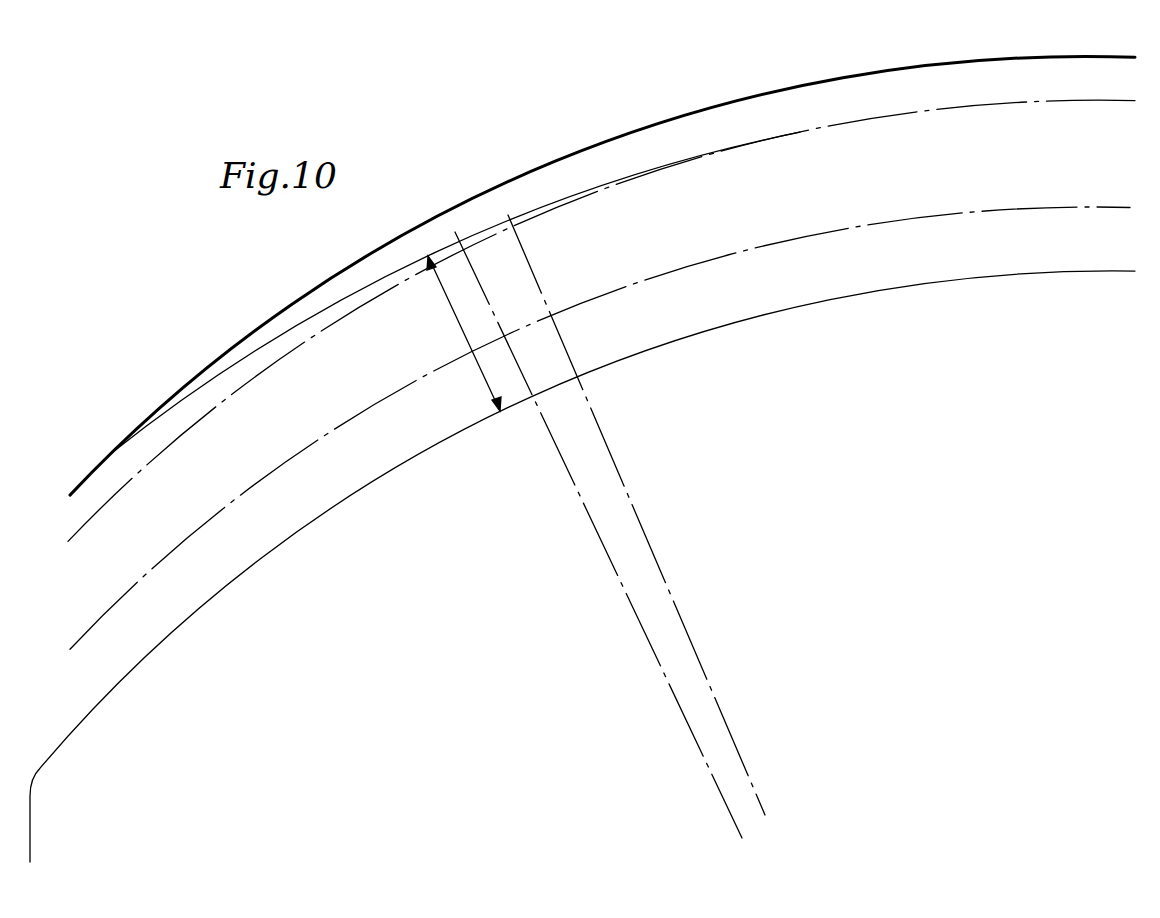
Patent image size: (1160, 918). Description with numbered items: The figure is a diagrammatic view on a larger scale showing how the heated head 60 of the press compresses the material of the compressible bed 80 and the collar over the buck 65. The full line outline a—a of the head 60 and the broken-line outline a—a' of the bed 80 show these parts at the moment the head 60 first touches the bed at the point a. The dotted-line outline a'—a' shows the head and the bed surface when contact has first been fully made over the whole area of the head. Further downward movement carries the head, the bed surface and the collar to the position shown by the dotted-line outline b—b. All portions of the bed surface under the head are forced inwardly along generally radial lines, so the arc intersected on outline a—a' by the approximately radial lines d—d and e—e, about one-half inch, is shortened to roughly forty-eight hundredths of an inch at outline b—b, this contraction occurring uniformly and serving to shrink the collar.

The heated head 60 is at (521, 177).
The buck 65 is at (706, 331).
The compressible bed 80 is at (466, 337).
The full line outline of head a is at (585, 273).
The dotted-line outline of head and bed surface a' is at (586, 317).
The dotted-line outline of lower position b is at (1128, 207).
The radial line d is at (633, 510).
The radial line e is at (595, 532).